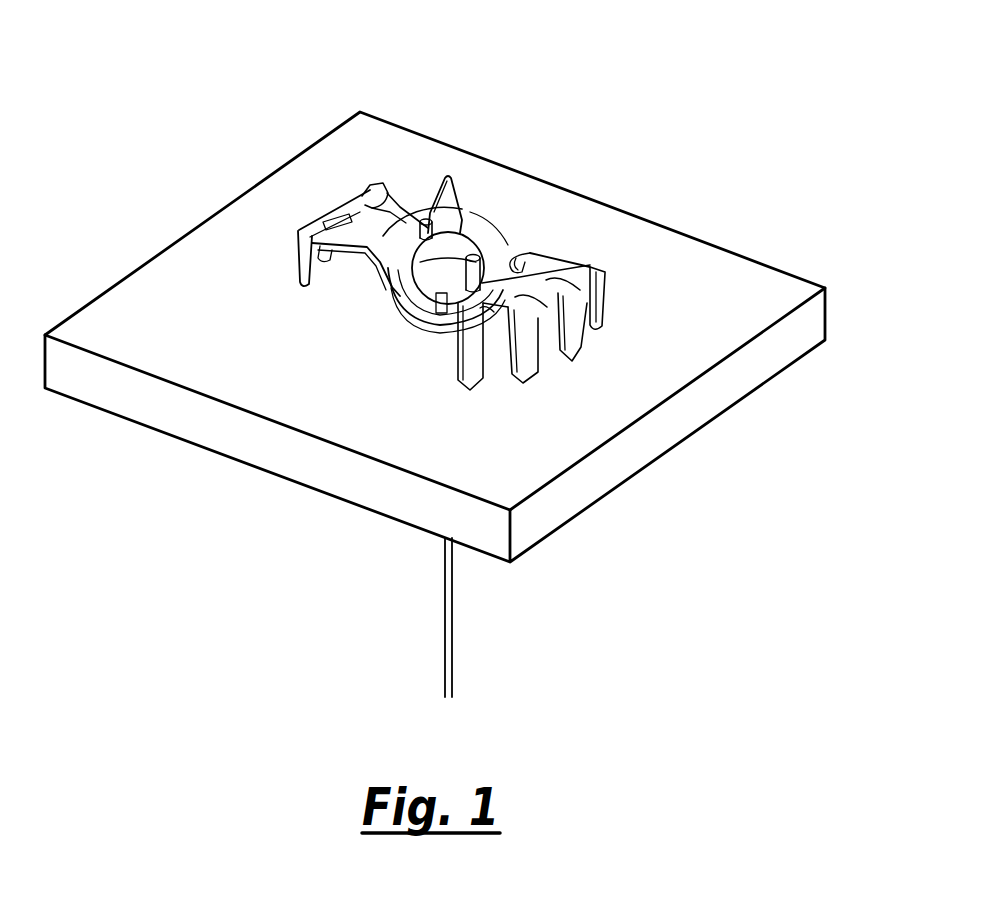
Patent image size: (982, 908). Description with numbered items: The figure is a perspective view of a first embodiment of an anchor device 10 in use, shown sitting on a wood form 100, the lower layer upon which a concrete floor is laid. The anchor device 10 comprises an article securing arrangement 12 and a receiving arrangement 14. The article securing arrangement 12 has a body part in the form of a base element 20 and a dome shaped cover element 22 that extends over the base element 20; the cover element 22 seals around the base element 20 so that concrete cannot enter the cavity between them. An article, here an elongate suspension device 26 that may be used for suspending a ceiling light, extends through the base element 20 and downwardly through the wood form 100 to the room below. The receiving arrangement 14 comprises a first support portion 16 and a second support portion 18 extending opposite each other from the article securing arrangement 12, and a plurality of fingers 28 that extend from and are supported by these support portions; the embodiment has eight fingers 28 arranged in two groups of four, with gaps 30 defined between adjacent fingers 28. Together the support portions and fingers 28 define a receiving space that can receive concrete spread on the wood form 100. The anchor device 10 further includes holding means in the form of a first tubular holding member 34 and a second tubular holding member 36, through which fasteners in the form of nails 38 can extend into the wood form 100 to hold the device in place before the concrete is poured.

The wood form 100 is at (283, 165).
The anchor device 10 is at (466, 192).
The article securing arrangement 12 is at (484, 234).
The receiving arrangement 14 is at (592, 267).
The first support portion 16 is at (398, 203).
The second support portion 18 is at (455, 312).
The base element 20 is at (410, 308).
The cover element 22 is at (427, 273).
The elongate suspension device 26 is at (457, 643).
The fingers 28 is at (375, 180).
The gaps 30 is at (493, 362).
The first tubular holding member 34 is at (395, 226).
The second tubular holding member 36 is at (480, 274).
The nails 38 is at (427, 226).